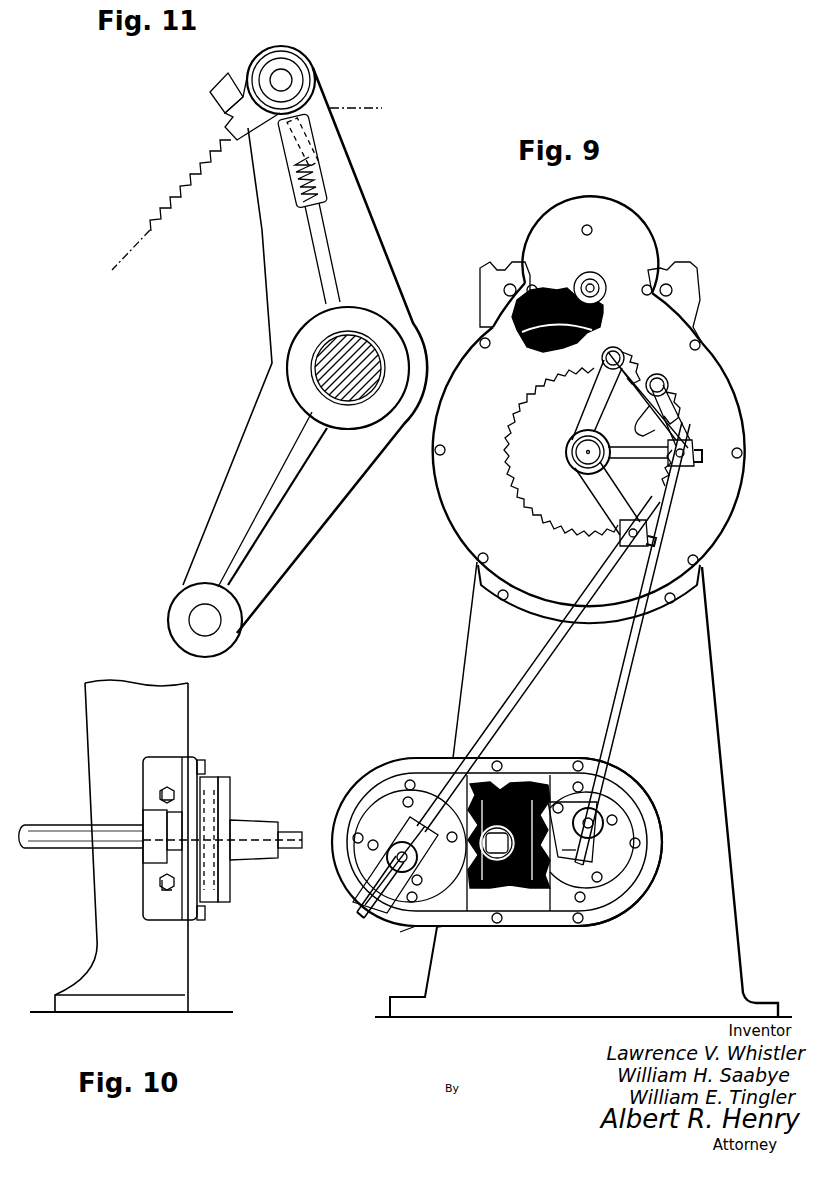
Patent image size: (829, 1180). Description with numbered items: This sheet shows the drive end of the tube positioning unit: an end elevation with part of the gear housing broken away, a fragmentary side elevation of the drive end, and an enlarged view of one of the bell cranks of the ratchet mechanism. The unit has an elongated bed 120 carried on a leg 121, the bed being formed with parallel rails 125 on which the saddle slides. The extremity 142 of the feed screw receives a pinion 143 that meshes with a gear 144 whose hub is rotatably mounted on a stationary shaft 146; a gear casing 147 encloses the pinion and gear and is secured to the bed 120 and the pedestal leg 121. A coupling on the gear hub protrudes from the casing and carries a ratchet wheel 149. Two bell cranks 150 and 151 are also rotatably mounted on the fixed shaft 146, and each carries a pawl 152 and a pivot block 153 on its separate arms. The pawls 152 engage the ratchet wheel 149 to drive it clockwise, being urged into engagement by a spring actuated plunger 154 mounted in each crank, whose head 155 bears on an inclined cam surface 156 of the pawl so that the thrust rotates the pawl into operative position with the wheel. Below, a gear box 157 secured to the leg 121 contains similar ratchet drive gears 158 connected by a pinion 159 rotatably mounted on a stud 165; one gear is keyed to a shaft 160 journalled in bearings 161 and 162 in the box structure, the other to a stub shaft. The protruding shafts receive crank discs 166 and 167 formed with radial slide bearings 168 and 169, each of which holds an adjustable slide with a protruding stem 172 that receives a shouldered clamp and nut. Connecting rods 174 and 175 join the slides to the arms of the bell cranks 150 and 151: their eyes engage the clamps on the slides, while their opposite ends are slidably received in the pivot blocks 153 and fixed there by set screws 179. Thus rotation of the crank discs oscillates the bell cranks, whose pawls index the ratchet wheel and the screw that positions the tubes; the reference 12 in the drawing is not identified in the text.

In FIG. 9, the gear housing 12 is at (382, 820).
In FIG. 9, the elongated bed 120 is at (502, 268).
In FIG. 9, the leg 121 is at (460, 677).
In FIG. 10, the leg 121 is at (131, 846).
In FIG. 9, the parallel rails 125 is at (497, 265).
In FIG. 9, the screw extremity 142 is at (604, 275).
In FIG. 9, the pinion 143 is at (584, 288).
In FIG. 9, the gear 144 is at (515, 318).
In FIG. 11, the stationary shaft 146 is at (345, 365).
In FIG. 9, the stationary shaft 146 is at (584, 458).
In FIG. 9, the gear casing 147 is at (606, 242).
In FIG. 9, the ratchet wheel 149 is at (588, 452).
In FIG. 11, the bell crank 150 is at (270, 232).
In FIG. 9, the bell crank 150 is at (603, 497).
In FIG. 9, the bell crank 151 is at (652, 440).
In FIG. 11, the pawl 152 is at (233, 126).
In FIG. 9, the pawl 152 is at (628, 362).
In FIG. 9, the pivot block 153 is at (694, 450).
In FIG. 11, the spring actuated plunger 154 is at (300, 114).
In FIG. 11, the plunger head 155 is at (300, 110).
In FIG. 11, the cam surface 156 is at (312, 84).
In FIG. 9, the gear box 157 is at (412, 930).
In FIG. 9, the ratchet drive gears 158 is at (528, 800).
In FIG. 10, the ratchet drive gears 158 is at (215, 790).
In FIG. 9, the pinion 159 is at (436, 930).
In FIG. 10, the shaft 160 is at (60, 849).
In FIG. 10, the bearing 161 is at (150, 817).
In FIG. 10, the bearing 162 is at (252, 824).
In FIG. 9, the stud 165 is at (493, 830).
In FIG. 9, the crank disc 166 is at (372, 882).
In FIG. 9, the crank disc 167 is at (655, 825).
In FIG. 9, the radial slide bearing 168 is at (372, 918).
In FIG. 9, the radial slide bearing 169 is at (620, 792).
In FIG. 9, the protruding stem 172 is at (600, 824).
In FIG. 9, the connecting rod 174 is at (545, 665).
In FIG. 9, the connecting rod 175 is at (632, 655).
In FIG. 9, the set screw 179 is at (703, 458).